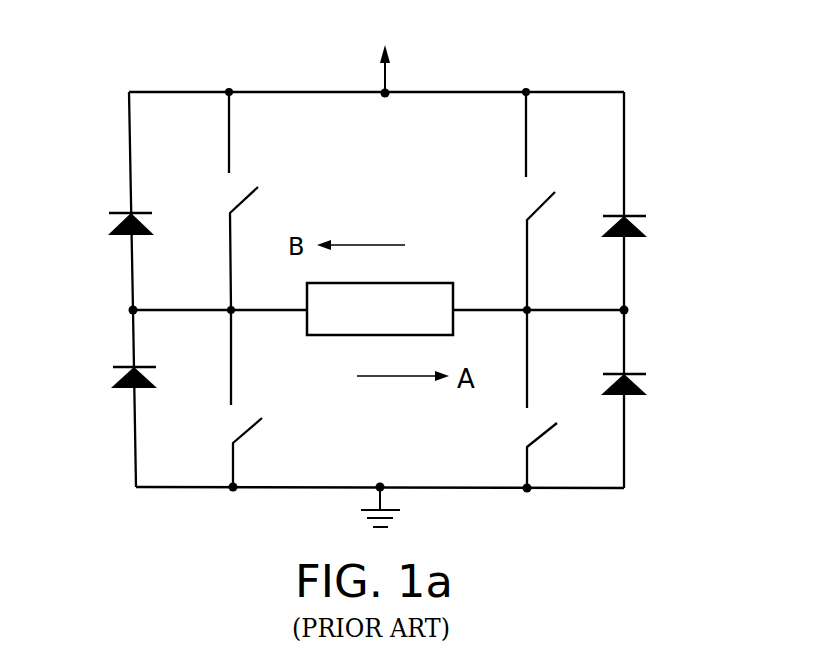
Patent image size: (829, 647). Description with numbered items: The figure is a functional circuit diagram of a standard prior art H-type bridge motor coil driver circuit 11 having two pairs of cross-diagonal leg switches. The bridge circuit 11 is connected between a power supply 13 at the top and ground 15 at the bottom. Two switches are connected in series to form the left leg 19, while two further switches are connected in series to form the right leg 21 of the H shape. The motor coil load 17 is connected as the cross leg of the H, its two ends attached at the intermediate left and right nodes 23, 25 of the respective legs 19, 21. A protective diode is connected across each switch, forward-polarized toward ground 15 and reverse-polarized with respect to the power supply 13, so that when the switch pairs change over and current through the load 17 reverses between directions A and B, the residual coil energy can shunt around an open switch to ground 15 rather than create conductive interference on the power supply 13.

The H-type bridge motor coil driver circuit 11 is at (676, 434).
The power supply 13 is at (412, 33).
The ground 15 is at (392, 517).
The load 17 is at (424, 283).
The left leg 19 is at (100, 268).
The right leg 21 is at (624, 310).
The left node 23 is at (133, 310).
The right node 25 is at (674, 310).